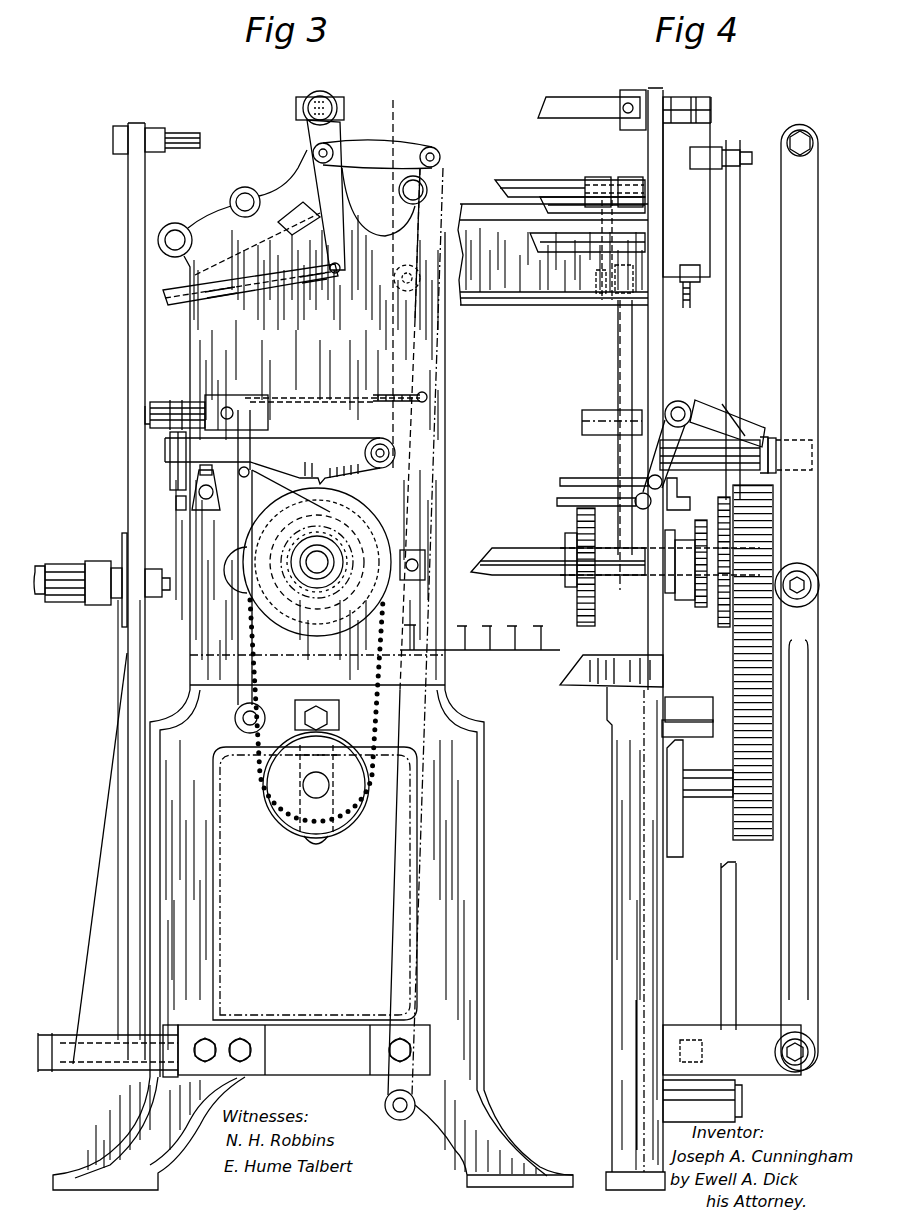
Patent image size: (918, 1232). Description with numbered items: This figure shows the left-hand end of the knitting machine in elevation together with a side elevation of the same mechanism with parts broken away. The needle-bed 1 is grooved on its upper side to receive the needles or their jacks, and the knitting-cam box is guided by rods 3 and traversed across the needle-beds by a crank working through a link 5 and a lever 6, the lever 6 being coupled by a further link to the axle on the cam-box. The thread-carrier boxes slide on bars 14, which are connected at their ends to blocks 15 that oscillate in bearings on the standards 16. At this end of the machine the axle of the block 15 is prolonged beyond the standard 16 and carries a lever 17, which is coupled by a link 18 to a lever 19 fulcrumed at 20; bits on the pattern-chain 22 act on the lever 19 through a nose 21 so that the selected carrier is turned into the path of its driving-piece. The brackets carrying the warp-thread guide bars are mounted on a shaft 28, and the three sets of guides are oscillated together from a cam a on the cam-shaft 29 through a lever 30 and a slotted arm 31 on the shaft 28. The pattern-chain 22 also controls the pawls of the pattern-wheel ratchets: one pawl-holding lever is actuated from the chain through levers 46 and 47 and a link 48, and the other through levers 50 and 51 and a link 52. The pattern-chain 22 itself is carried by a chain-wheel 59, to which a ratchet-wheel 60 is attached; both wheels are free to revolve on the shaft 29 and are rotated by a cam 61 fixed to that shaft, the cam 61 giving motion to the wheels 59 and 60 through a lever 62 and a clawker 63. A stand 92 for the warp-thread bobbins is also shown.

In FIG. 3, the needle-bed 1 is at (248, 259).
In FIG. 4, the needle-bed 1 is at (553, 252).
In FIG. 3, the rods 3 is at (209, 222).
In FIG. 4, the rods 3 is at (540, 208).
In FIG. 3, the link 5 is at (102, 580).
In FIG. 3, the lever 6 is at (136, 589).
In FIG. 4, the lever 6 is at (778, 978).
In FIG. 4, the bars 14 is at (589, 108).
In FIG. 3, the blocks 15 is at (336, 108).
In FIG. 4, the blocks 15 is at (634, 98).
In FIG. 3, the standards 16 is at (313, 670).
In FIG. 4, the standards 16 is at (612, 639).
In FIG. 3, the lever 17 is at (318, 195).
In FIG. 4, the lever 17 is at (714, 140).
In FIG. 3, the link 18 is at (376, 154).
In FIG. 4, the link 18 is at (740, 165).
In FIG. 3, the lever 19 is at (432, 629).
In FIG. 4, the lever 19 is at (735, 214).
In FIG. 3, the fulcrum 20 is at (226, 1072).
In FIG. 4, the fulcrum 20 is at (732, 1073).
In FIG. 3, the nose 21 is at (425, 558).
In FIG. 4, the nose 21 is at (518, 557).
In FIG. 3, the pattern-chain 22 is at (262, 660).
In FIG. 4, the pattern-chain 22 is at (772, 522).
In FIG. 3, the shaft 28 is at (399, 190).
In FIG. 4, the shaft 28 is at (570, 192).
In FIG. 3, the cam-shaft 29 is at (321, 560).
In FIG. 4, the cam-shaft 29 is at (615, 561).
In FIG. 3, the lever 30 is at (392, 352).
In FIG. 4, the lever 30 is at (618, 372).
In FIG. 3, the slotted arm 31 is at (396, 266).
In FIG. 4, the slotted arm 31 is at (595, 270).
In FIG. 3, the lever 46 is at (280, 461).
In FIG. 4, the lever 46 is at (780, 440).
In FIG. 3, the lever 47 is at (170, 395).
In FIG. 4, the lever 47 is at (758, 440).
In FIG. 3, the link 48 is at (172, 486).
In FIG. 4, the link 48 is at (604, 471).
In FIG. 3, the lever 50 is at (210, 392).
In FIG. 4, the lever 50 is at (740, 440).
In FIG. 4, the lever 51 is at (755, 445).
In FIG. 3, the link 52 is at (176, 504).
In FIG. 4, the link 52 is at (584, 499).
In FIG. 3, the chain-wheel 59 is at (372, 508).
In FIG. 3, the ratchet-wheel 60 is at (340, 620).
In FIG. 4, the ratchet-wheel 60 is at (718, 612).
In FIG. 3, the cam 61 is at (352, 530).
In FIG. 4, the cam 61 is at (695, 530).
In FIG. 3, the lever 62 is at (238, 524).
In FIG. 4, the lever 62 is at (702, 672).
In FIG. 3, the clawker 63 is at (277, 531).
In FIG. 4, the clawker 63 is at (716, 480).
In FIG. 3, the stand 92 is at (480, 651).
In FIG. 3, the cam a is at (310, 615).
In FIG. 4, the cam a is at (596, 612).